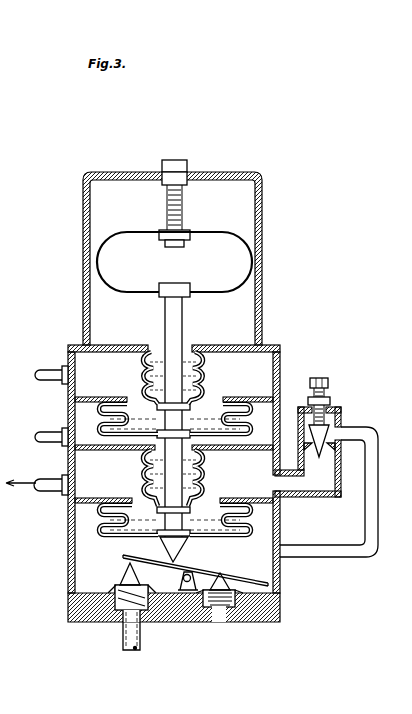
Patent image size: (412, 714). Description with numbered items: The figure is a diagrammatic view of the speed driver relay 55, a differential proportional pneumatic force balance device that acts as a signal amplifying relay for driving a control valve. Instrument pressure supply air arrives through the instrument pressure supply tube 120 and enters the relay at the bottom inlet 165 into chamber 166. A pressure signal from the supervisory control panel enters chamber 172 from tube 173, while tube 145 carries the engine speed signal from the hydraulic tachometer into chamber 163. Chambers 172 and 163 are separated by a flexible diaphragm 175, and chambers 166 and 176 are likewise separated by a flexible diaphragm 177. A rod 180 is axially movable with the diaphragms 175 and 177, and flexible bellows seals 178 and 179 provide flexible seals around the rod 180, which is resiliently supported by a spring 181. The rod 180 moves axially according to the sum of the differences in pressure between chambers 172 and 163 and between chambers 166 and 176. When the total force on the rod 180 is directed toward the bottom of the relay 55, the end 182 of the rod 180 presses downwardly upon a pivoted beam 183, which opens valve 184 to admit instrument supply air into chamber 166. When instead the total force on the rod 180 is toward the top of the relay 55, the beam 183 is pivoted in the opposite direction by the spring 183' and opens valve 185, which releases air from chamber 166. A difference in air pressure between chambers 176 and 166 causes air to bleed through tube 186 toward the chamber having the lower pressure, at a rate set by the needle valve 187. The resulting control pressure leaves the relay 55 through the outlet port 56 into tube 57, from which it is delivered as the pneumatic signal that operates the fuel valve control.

The speed driver relay 55 is at (65, 637).
The outlet port 56 is at (63, 476).
The tube 57 is at (45, 494).
The instrument pressure supply tube 120 is at (137, 640).
The tube 145 is at (38, 446).
The chamber 163 is at (45, 437).
The bottom inlet 165 is at (124, 626).
The chamber 166 is at (88, 558).
The chamber 172 is at (258, 374).
The tube 173 is at (42, 368).
The flexible diaphragm 175 is at (88, 428).
The chamber 176 is at (93, 484).
The flexible diaphragm 177 is at (265, 522).
The flexible bellows seal 178 is at (145, 376).
The flexible bellows seal 179 is at (203, 468).
The rod 180 is at (178, 332).
The spring 181 is at (223, 236).
The end of rod 182 is at (176, 553).
The pivoted beam 183 is at (106, 549).
The spring 183' is at (261, 589).
The valve 184 is at (126, 572).
The valve 185 is at (222, 574).
The tube 186 is at (362, 558).
The needle valve 187 is at (322, 438).